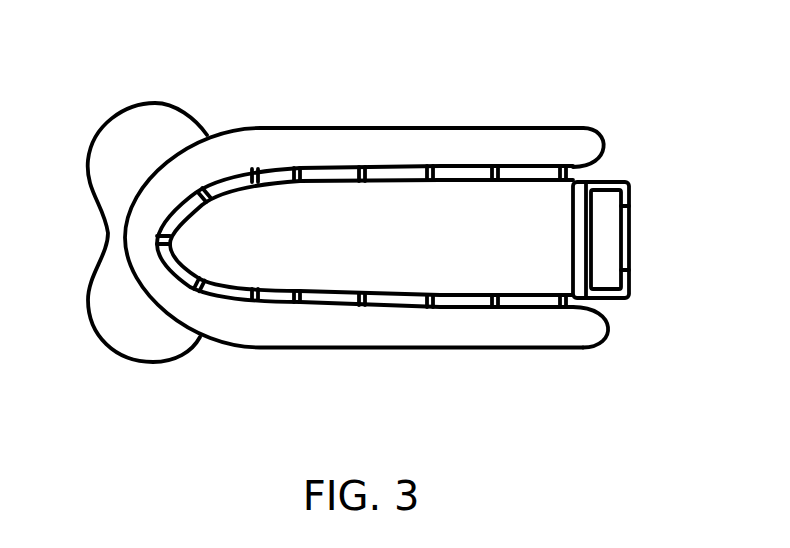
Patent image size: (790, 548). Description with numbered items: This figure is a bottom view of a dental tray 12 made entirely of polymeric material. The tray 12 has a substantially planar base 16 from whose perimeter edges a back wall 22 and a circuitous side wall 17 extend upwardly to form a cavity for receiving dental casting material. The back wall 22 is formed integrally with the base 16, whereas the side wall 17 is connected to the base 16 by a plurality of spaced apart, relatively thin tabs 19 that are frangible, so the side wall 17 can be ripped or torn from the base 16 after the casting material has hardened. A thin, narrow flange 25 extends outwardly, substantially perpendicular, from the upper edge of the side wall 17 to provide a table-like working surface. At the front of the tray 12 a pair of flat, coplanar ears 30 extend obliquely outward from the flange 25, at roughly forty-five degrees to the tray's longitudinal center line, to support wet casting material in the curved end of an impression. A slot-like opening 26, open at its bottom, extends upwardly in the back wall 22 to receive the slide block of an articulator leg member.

The dental tray 12 is at (377, 217).
The planar base 16 is at (455, 208).
The circuitous side wall 17 is at (335, 166).
The thin tabs 19 is at (300, 168).
The back wall 22 is at (633, 167).
The flange 25 is at (247, 142).
The slot-like opening 26 is at (605, 244).
The ears 30 is at (132, 140).